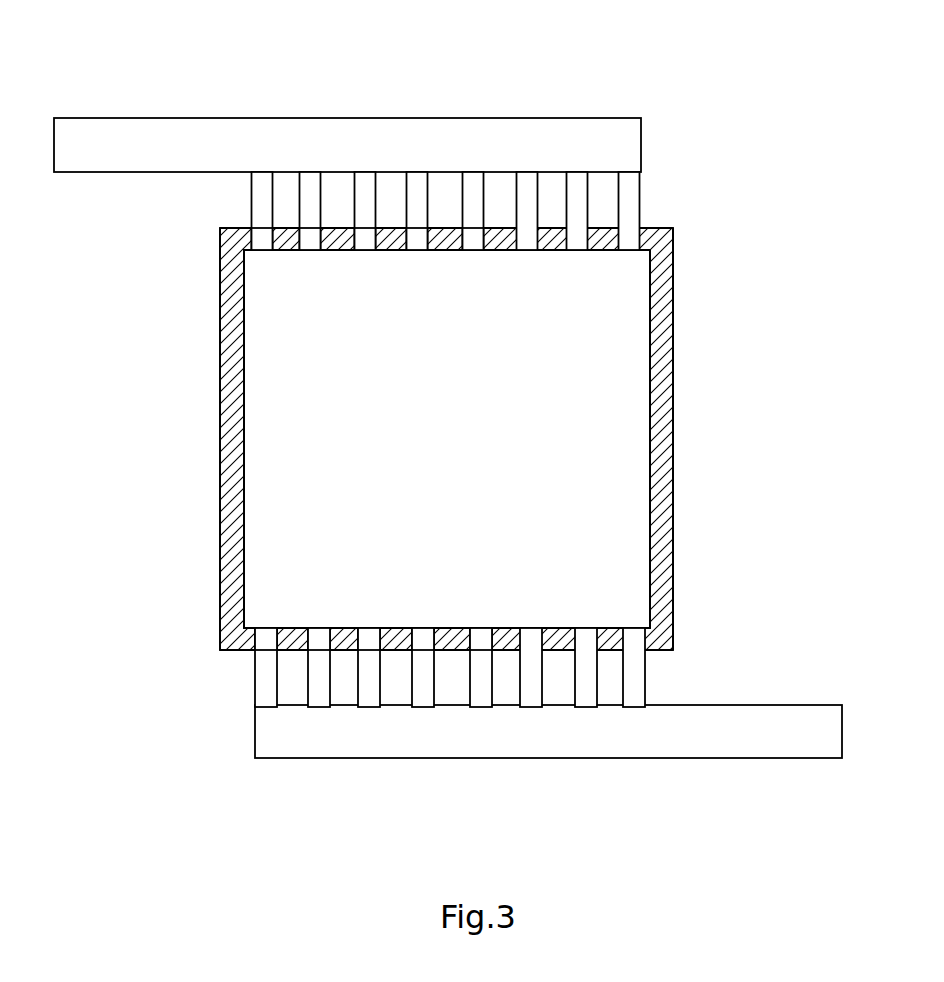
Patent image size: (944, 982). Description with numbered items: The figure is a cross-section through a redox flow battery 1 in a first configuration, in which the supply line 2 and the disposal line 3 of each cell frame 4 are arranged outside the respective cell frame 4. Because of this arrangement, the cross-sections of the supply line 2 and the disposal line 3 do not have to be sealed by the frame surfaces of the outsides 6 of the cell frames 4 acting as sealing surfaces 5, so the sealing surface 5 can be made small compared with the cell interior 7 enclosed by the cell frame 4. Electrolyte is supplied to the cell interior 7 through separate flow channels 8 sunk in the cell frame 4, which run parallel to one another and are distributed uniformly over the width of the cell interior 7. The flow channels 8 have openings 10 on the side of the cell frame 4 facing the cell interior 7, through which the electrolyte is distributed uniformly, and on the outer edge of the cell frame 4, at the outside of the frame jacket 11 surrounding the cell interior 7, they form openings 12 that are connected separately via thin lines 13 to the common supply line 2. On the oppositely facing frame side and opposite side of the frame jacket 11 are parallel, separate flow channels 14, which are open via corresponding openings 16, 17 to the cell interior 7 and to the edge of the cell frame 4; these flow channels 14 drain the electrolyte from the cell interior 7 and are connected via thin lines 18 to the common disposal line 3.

The redox flow battery 1 is at (716, 93).
The supply line 2 is at (122, 132).
The disposal line 3 is at (773, 745).
The cell frame 4 is at (676, 278).
The sealing surface 5 is at (668, 346).
The outside 6 is at (688, 416).
The cell interior 7 is at (440, 440).
The flow channels 8 is at (308, 244).
The openings 10 is at (262, 252).
The frame jacket 11 is at (220, 290).
The openings 12 is at (262, 222).
The thin lines 13 is at (310, 182).
The flow channels 14 is at (368, 630).
The openings 16 is at (266, 626).
The openings 17 is at (266, 652).
The thin lines 18 is at (370, 695).